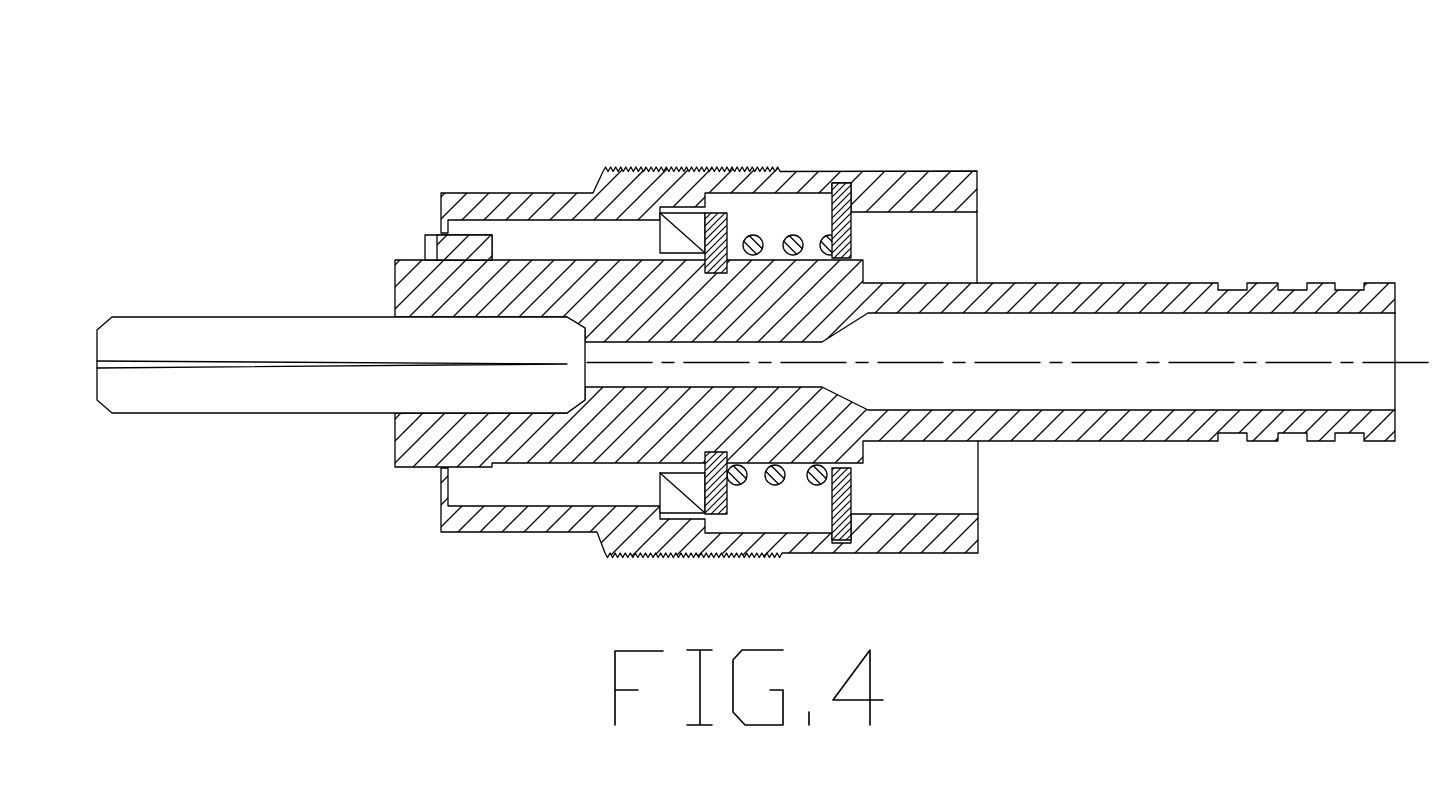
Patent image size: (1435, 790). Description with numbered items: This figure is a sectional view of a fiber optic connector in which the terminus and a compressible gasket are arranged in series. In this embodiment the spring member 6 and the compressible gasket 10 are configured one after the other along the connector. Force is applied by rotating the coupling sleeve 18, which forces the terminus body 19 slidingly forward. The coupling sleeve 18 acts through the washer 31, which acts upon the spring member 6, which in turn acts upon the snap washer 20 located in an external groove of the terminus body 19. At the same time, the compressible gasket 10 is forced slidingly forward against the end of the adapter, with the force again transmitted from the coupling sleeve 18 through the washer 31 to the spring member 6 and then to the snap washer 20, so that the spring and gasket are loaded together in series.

The terminus body 19 is at (517, 288).
The compressible gasket 10 is at (683, 227).
The snap washer 20 is at (717, 213).
The spring member 6 is at (794, 237).
The washer 31 is at (851, 180).
The coupling sleeve 18 is at (960, 190).